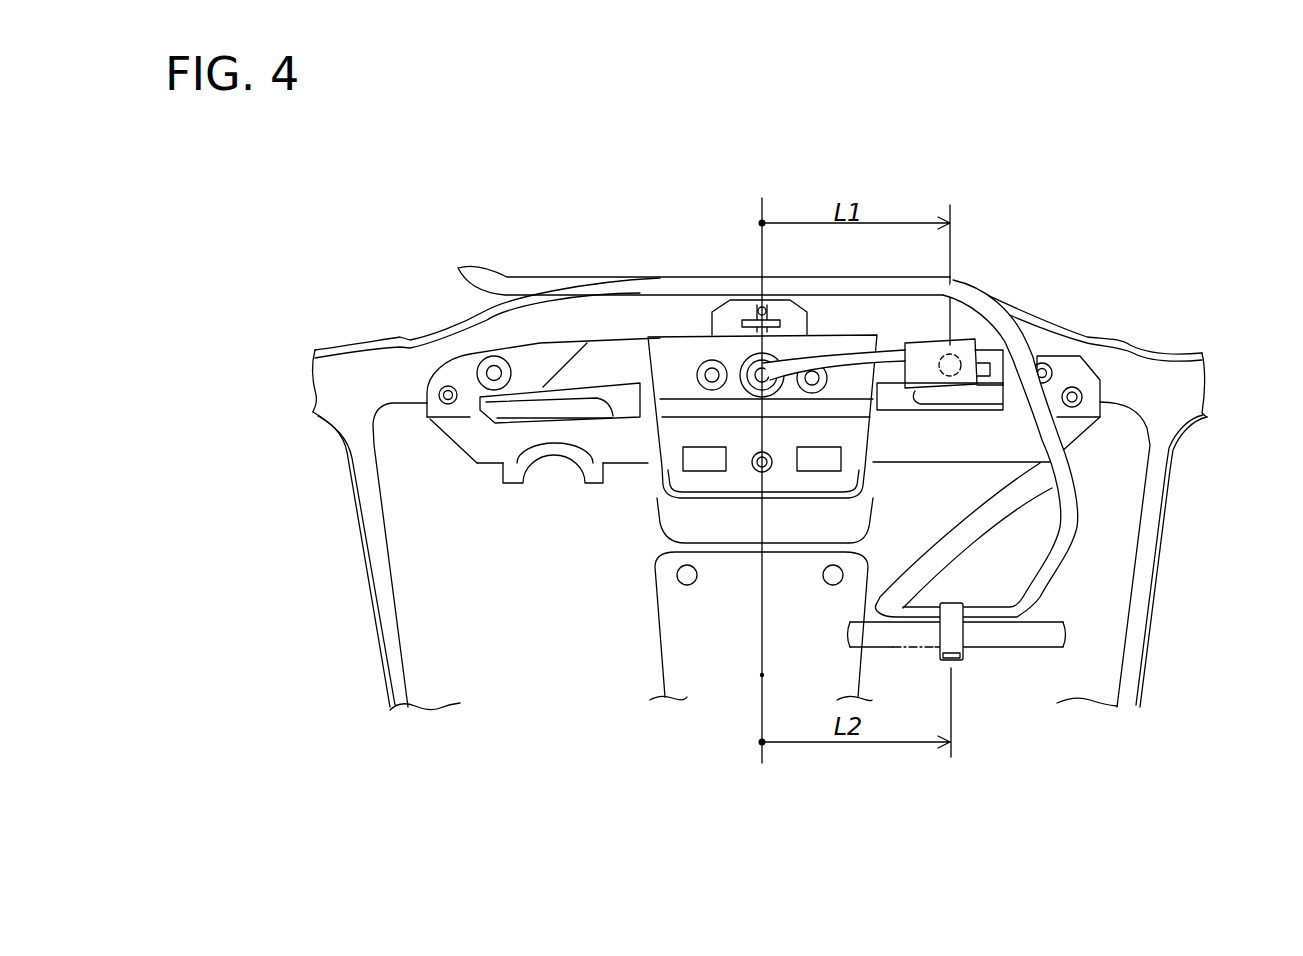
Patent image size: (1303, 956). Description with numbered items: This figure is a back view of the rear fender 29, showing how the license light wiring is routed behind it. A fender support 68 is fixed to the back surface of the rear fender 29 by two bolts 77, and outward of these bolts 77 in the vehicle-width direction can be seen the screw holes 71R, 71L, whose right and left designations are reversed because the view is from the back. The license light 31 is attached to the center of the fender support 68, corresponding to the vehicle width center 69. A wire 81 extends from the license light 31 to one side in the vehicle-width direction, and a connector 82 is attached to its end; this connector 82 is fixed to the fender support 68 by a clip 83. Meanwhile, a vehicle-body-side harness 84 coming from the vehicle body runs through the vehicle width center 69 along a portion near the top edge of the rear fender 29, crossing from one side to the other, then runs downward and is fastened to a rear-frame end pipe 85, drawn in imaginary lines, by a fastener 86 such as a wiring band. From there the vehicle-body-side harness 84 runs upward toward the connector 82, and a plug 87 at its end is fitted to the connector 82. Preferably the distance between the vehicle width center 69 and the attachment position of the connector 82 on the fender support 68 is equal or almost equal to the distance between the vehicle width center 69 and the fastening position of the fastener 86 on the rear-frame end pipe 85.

The rear fender 29 is at (455, 622).
The license light 31 is at (760, 375).
The fender support 68 is at (633, 337).
The vehicle width center 69 is at (762, 675).
The screw hole 71R is at (440, 392).
The screw hole 71L is at (1080, 398).
The bolt 77 is at (493, 370).
The wire 81 is at (833, 358).
The connector 82 is at (925, 343).
The clip 83 is at (975, 338).
The vehicle-body-side harness 84 is at (988, 520).
The rear-frame end pipe 85 is at (975, 650).
The fastener 86 is at (967, 655).
The plug 87 is at (982, 347).